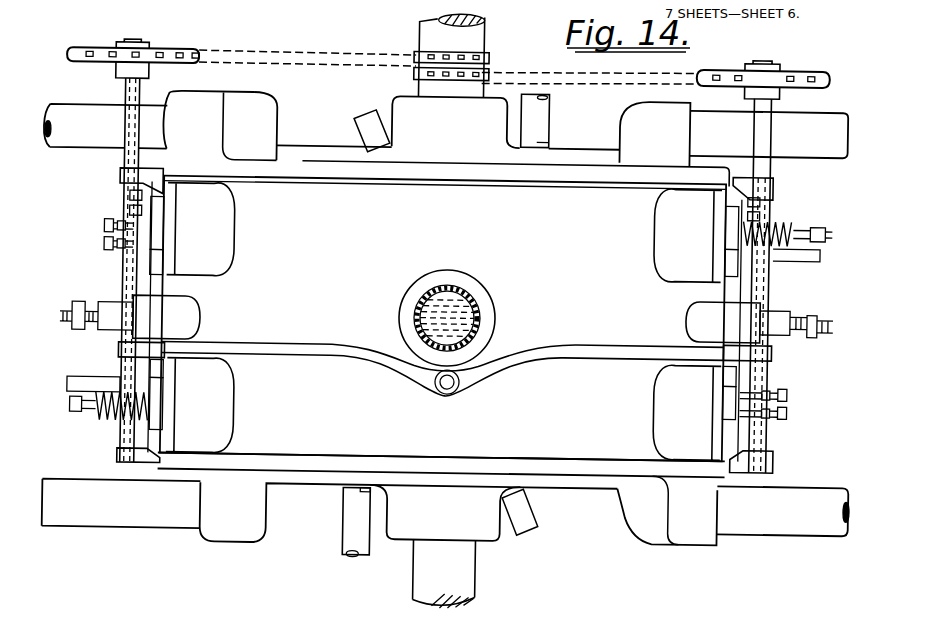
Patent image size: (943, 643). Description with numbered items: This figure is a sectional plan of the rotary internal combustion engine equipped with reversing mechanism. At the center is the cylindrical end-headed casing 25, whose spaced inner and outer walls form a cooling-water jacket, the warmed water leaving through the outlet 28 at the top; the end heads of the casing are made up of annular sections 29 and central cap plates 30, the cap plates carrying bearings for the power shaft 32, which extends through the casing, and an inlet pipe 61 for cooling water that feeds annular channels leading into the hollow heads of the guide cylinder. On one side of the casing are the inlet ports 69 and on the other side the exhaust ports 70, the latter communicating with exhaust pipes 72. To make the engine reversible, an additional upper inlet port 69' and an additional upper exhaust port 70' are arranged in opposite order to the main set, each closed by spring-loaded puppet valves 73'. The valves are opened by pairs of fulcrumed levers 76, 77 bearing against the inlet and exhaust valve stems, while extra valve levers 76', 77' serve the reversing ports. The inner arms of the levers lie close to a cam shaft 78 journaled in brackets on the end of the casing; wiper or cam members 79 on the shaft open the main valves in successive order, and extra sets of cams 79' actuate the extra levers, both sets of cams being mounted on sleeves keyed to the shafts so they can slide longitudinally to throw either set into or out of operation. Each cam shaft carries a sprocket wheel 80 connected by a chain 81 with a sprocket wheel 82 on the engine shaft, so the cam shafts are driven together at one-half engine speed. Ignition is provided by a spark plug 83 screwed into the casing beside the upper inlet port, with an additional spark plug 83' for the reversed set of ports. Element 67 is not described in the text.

The cylindrical end-headed casing 25 is at (445, 318).
The outlet 28 is at (478, 309).
The annular sections 29 is at (303, 163).
The central cap plates 30 is at (582, 148).
The power shaft 32 is at (469, 582).
The inlet pipe 61 is at (346, 551).
The block fitting 67 is at (546, 111).
The inlet ports 69 is at (687, 412).
The additional upper inlet port 69' is at (201, 229).
The exhaust ports 70 is at (200, 404).
The additional upper exhaust port 70' is at (688, 236).
The exhaust pipes 72 is at (74, 539).
The valves 73' is at (461, 227).
The levers 76 is at (779, 427).
The extra valve levers 76' is at (87, 231).
The levers 77 is at (88, 407).
The extra valve levers 77' is at (821, 248).
The cam shaft 78 is at (119, 441).
The wiper or cam members 79 is at (789, 383).
The extra sets of cams 79' is at (439, 193).
The sprocket wheel 80 is at (87, 54).
The chain 81 is at (272, 60).
The sprocket wheel 82 is at (413, 73).
The spark plug 83 is at (760, 311).
The additional spark plug 83' is at (116, 328).